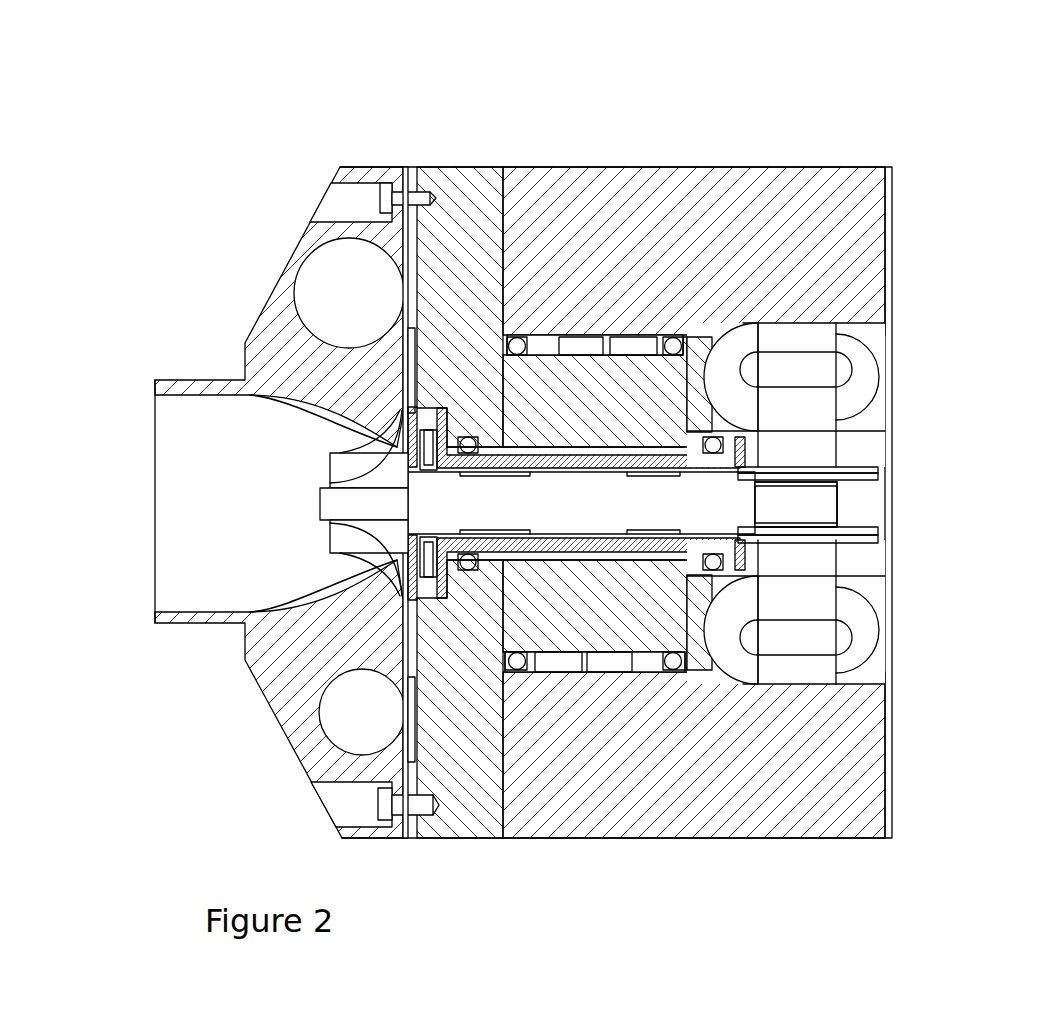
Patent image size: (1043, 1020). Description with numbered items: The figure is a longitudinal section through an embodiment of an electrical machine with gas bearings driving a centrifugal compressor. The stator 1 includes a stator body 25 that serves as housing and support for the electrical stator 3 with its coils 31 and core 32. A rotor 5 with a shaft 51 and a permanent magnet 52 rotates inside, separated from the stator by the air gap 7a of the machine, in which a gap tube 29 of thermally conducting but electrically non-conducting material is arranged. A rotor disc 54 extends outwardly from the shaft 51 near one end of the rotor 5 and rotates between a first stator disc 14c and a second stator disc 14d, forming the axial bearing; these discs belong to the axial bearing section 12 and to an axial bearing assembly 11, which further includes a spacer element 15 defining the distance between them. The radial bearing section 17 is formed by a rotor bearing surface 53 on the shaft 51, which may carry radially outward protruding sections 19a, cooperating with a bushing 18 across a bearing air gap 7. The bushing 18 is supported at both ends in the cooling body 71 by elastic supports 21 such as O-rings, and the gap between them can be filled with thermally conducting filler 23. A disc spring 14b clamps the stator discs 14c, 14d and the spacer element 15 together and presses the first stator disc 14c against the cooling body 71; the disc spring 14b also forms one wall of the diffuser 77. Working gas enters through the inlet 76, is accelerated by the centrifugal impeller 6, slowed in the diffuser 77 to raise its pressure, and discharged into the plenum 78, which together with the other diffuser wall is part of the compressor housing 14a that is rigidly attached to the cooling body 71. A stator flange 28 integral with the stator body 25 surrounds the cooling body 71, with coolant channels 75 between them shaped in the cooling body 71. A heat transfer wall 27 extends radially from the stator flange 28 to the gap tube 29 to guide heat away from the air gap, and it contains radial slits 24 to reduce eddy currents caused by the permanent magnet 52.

The stator 1 is at (806, 138).
The electrical stator 3 is at (917, 132).
The rotor 5 is at (1008, 455).
The centrifugal impeller 6 is at (310, 478).
The bearing air gap 7 is at (515, 462).
The air gap of the electrical machine 7a is at (840, 527).
The axial bearing assembly 11 is at (396, 585).
The axial bearing section 12 is at (440, 618).
The compressor housing 14a is at (318, 767).
The disc spring 14b is at (407, 687).
The first stator disc 14c is at (440, 566).
The second stator disc 14d is at (407, 545).
The spacer element 15 is at (425, 592).
The radial bearing section 17 is at (572, 597).
The bushing 18 is at (592, 552).
The radially outward protruding sections 19a is at (794, 706).
The elastic supports 21 is at (470, 568).
The thermally conducting filler 23 is at (533, 537).
The radial slits 24 is at (760, 548).
The stator body 25 is at (830, 205).
The heat transfer wall 27 is at (690, 415).
The stator flange 28 is at (585, 290).
The gap tube 29 is at (845, 468).
The coil 31 is at (862, 370).
The core 32 is at (795, 340).
The shaft 51 is at (680, 497).
The permanent magnet 52 is at (795, 510).
The rotor bearing surface 53 is at (645, 536).
The rotor disc 54 is at (420, 553).
The cooling body 71 is at (545, 372).
The coolant channels 75 is at (570, 345).
The inlet 76 is at (180, 448).
The diffuser 77 is at (398, 378).
The plenum 78 is at (350, 305).